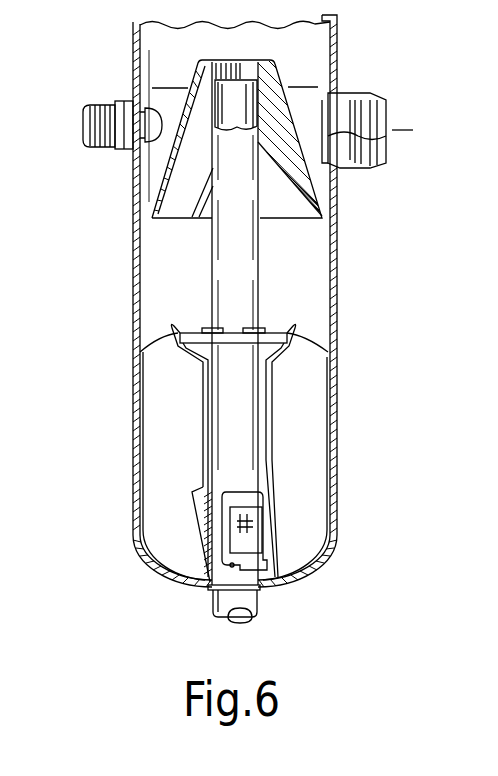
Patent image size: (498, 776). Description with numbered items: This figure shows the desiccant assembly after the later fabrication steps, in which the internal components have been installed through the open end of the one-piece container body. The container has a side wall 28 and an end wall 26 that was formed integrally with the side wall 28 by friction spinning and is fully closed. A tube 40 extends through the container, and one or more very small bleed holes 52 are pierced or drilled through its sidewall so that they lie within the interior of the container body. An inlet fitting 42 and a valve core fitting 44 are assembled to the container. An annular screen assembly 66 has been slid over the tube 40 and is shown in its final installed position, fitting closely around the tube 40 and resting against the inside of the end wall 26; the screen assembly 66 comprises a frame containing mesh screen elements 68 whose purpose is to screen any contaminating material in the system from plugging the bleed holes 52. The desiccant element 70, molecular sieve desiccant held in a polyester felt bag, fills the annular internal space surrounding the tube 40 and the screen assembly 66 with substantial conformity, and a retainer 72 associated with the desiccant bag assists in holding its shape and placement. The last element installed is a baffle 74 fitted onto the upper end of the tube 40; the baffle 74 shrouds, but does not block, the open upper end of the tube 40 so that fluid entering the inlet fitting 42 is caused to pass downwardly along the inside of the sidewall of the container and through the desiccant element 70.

The end wall 26 is at (297, 574).
The side wall 28 is at (338, 322).
The tube 40 is at (215, 618).
The inlet fitting 42 is at (355, 98).
The valve core fitting 44 is at (94, 108).
The bleed holes 52 is at (231, 567).
The annular screen assembly 66 is at (327, 553).
The mesh screen elements 68 is at (257, 527).
The desiccant element 70 is at (163, 438).
The retainer 72 is at (284, 332).
The baffle 74 is at (277, 68).